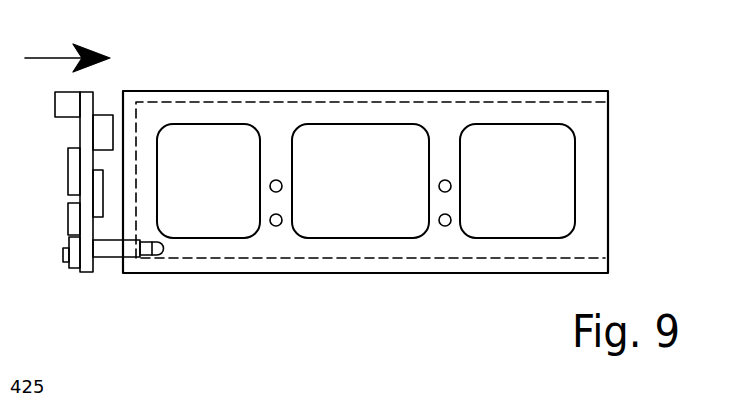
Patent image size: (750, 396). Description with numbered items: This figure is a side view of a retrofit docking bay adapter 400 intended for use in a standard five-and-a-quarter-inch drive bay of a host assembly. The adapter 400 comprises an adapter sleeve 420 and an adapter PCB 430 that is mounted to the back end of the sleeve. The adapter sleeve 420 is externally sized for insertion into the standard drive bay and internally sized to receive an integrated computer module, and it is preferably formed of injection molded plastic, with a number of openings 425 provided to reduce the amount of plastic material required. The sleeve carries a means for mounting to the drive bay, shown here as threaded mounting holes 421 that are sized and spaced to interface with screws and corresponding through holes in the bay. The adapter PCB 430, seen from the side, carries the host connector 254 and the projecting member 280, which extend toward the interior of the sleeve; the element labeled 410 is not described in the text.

The retrofit docking bay adapter 400 is at (459, 31).
The panel assembly 410 is at (630, 155).
The adapter sleeve 420 is at (584, 90).
The threaded mounting holes 421 is at (444, 180).
The openings 425 is at (547, 221).
The adapter PCB 430 is at (82, 95).
The host connector 254 is at (105, 125).
The projecting member 280 is at (112, 254).